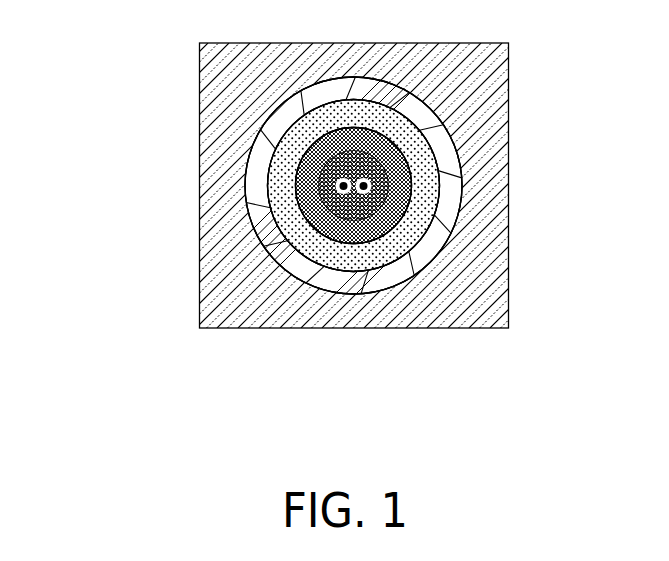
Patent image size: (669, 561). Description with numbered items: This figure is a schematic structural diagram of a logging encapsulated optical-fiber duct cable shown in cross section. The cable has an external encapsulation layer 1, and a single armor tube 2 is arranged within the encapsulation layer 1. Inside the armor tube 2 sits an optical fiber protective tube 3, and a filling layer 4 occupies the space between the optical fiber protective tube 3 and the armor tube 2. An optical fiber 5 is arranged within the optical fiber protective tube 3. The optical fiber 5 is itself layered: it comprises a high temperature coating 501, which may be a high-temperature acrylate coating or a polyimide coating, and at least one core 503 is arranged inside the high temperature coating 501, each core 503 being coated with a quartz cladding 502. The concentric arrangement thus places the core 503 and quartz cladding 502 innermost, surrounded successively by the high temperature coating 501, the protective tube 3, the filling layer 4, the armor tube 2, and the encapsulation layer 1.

The encapsulation layer 1 is at (478, 97).
The armor tube 2 is at (450, 176).
The optical fiber protective tube 3 is at (407, 217).
The filling layer 4 is at (390, 248).
The optical fiber 5 is at (93, 88).
The high temperature coating 501 is at (277, 235).
The quartz cladding 502 is at (300, 164).
The core 503 is at (268, 193).